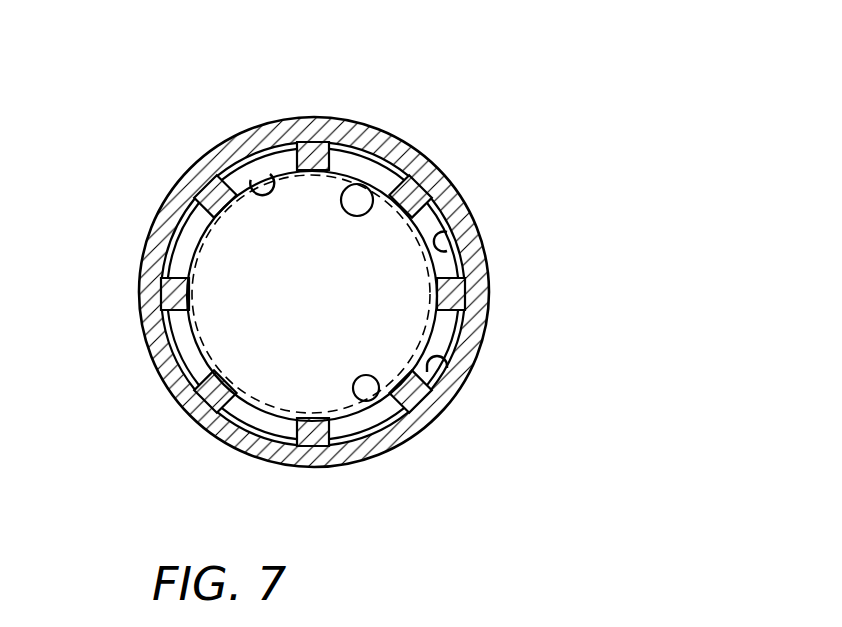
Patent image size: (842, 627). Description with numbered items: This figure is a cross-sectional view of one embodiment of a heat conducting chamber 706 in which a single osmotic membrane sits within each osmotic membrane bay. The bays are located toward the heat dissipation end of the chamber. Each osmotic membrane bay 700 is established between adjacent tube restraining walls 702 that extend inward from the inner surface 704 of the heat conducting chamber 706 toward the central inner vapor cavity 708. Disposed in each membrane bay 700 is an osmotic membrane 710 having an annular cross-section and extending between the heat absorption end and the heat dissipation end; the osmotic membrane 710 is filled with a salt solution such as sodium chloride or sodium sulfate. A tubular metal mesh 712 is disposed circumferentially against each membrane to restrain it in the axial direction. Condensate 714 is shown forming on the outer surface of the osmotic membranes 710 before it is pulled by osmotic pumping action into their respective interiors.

The osmotic membrane bay 700 is at (342, 163).
The tube restraining wall 702 is at (299, 121).
The inner surface 704 is at (447, 251).
The heat conducting chamber 706 is at (155, 380).
The inner vapor cavity 708 is at (335, 306).
The osmotic membrane 710 is at (388, 160).
The tubular metal mesh 712 is at (270, 174).
The condensate 714 is at (345, 212).